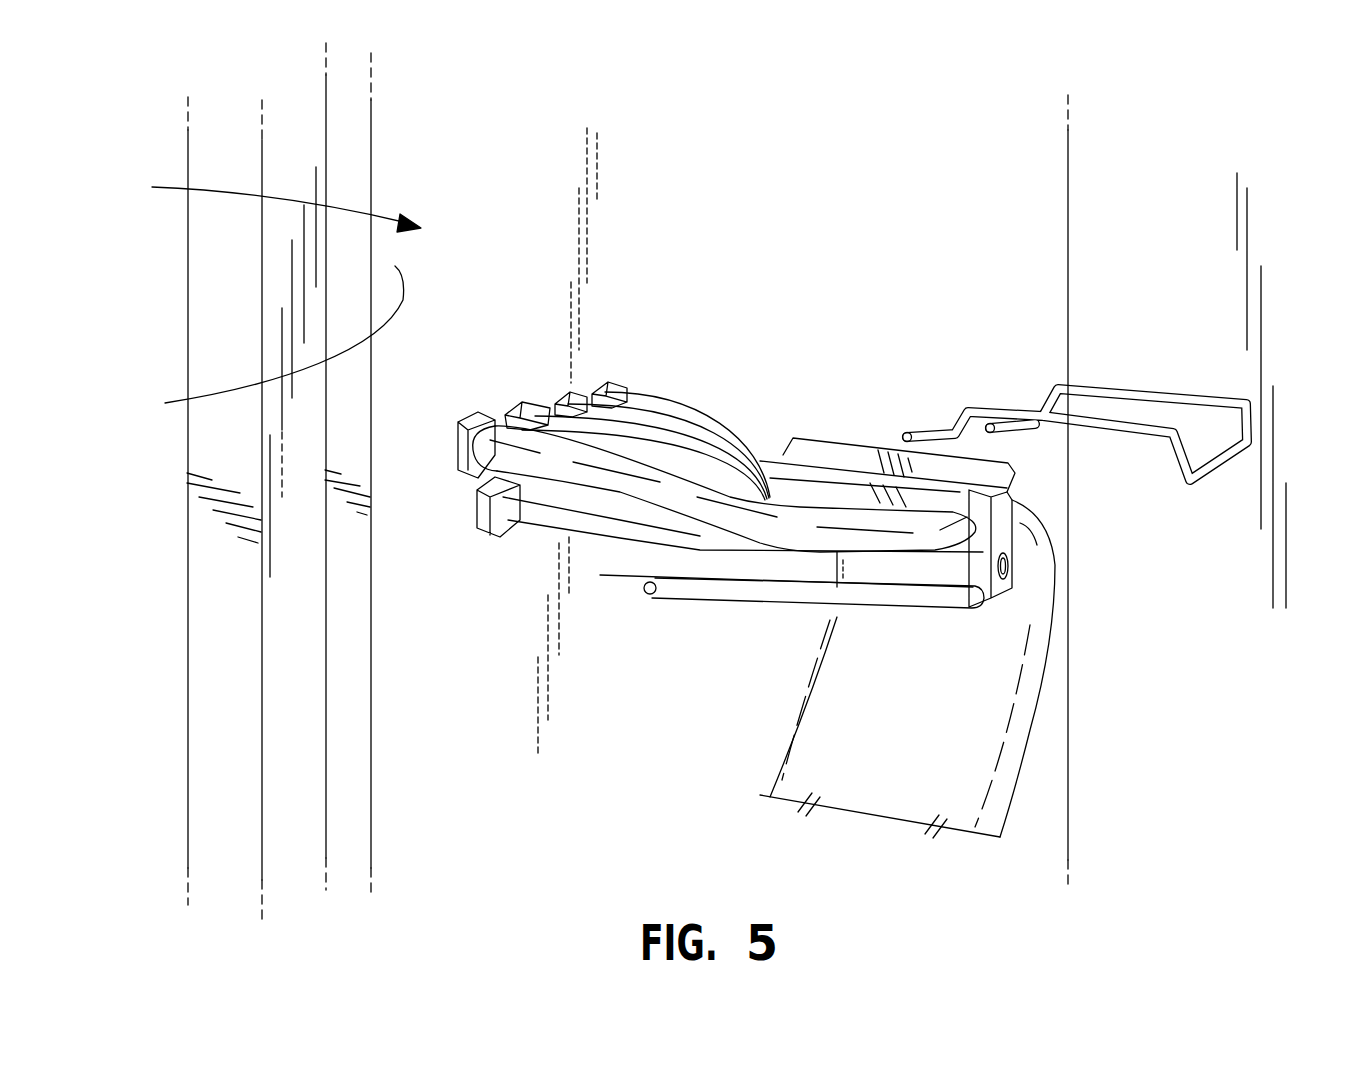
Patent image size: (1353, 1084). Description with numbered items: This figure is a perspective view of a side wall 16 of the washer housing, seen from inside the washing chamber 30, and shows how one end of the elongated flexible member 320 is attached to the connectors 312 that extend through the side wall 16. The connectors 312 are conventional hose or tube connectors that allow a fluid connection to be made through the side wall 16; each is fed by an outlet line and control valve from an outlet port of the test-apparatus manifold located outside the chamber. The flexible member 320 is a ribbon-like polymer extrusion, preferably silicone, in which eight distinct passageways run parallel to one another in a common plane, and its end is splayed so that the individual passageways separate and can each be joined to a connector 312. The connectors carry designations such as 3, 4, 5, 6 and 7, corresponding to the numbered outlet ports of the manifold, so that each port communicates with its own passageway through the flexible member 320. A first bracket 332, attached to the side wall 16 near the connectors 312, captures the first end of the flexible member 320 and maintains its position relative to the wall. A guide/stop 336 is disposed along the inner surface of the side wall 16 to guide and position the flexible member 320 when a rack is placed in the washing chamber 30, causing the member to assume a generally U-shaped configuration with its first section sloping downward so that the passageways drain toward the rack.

The washing chamber 30 is at (267, 198).
The side wall 16 is at (267, 344).
The connector 312 is at (517, 417).
The connector designation 3 is at (743, 542).
The connector designation 4 is at (669, 422).
The connector designation 5 is at (651, 429).
The connector designation 6 is at (640, 434).
The connector designation 7 is at (722, 465).
The first bracket 332 is at (838, 455).
The guide/stop 336 is at (1130, 398).
The elongated flexible member 320 is at (805, 697).